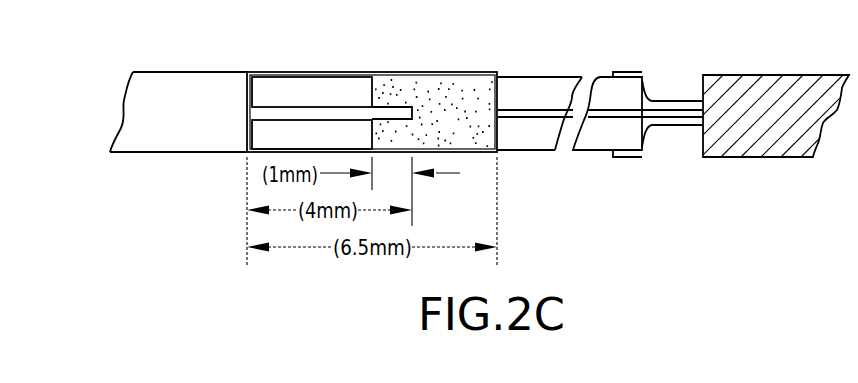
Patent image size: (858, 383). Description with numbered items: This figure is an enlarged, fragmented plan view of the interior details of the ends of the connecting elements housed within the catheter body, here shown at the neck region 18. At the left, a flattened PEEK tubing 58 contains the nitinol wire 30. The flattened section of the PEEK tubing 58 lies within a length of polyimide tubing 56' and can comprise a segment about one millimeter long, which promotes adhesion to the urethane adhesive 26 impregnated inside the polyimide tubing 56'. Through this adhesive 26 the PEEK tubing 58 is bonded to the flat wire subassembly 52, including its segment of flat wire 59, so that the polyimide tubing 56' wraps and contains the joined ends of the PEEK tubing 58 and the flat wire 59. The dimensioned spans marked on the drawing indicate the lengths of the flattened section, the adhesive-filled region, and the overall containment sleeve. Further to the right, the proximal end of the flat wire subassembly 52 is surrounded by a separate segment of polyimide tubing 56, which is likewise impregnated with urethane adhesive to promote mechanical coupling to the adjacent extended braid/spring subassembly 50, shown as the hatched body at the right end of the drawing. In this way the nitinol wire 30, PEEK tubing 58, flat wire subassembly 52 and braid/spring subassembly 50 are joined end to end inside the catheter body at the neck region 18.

The neck region 18 is at (153, 72).
The polyimide tubing 56' is at (370, 87).
The nitinol wire 30 is at (248, 137).
The PEEK tubing 58 is at (392, 107).
The urethane adhesive 26 is at (458, 100).
The segment of flat wire 59 is at (530, 92).
The flat wire subassembly 52 is at (533, 170).
The polyimide tubing 56 is at (638, 89).
The extended braid/spring subassembly 50 is at (782, 75).